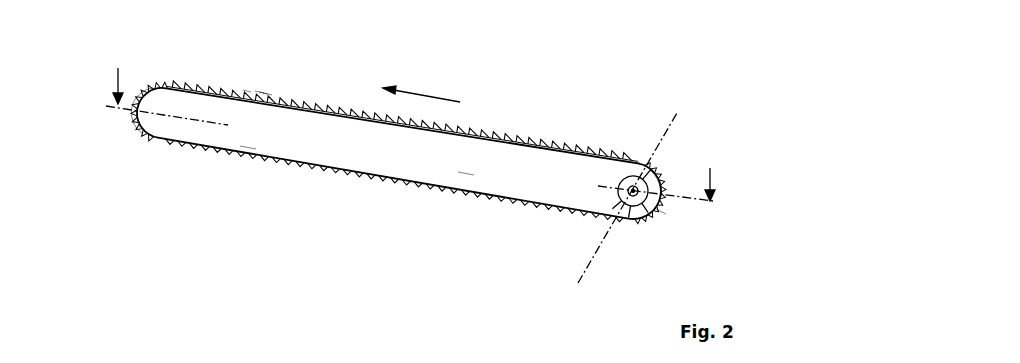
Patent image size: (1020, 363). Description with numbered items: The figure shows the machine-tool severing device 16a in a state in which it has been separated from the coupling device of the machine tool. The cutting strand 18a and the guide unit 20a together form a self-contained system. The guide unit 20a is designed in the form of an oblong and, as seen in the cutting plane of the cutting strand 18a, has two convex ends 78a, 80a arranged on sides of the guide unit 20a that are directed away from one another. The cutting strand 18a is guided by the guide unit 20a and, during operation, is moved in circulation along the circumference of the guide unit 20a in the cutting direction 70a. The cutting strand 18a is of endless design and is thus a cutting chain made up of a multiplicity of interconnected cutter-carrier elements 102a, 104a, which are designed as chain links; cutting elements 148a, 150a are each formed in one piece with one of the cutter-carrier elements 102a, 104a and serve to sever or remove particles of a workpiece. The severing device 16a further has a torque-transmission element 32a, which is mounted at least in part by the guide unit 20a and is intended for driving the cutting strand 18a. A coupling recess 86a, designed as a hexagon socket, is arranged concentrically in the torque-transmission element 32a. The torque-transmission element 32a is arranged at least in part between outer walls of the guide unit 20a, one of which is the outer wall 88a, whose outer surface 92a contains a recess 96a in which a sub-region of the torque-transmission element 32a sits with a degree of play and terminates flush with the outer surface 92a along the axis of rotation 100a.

The machine-tool severing device 16a is at (612, 56).
The cutting strand 18a is at (207, 86).
The guide unit 20a is at (536, 184).
The torque-transmission element 32a is at (636, 204).
The cutting direction 70a is at (426, 95).
The convex end 78a is at (138, 144).
The convex end 80a is at (672, 222).
The coupling recess 86a is at (630, 162).
The outer wall 88a is at (249, 143).
The outer surface 92a is at (466, 172).
The recess 96a is at (660, 211).
The axis of rotation 100a is at (677, 113).
The cutter-carrier element 102a is at (247, 90).
The cutter-carrier element 104a is at (263, 93).
The cutting element 148a is at (260, 93).
The cutting element 150a is at (267, 95).